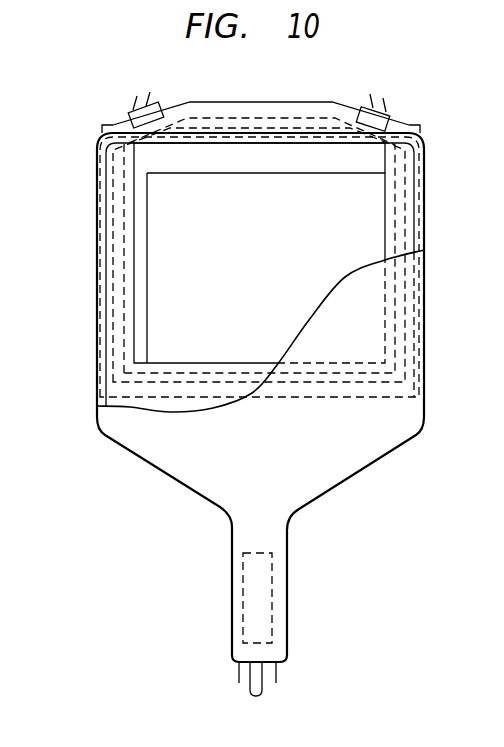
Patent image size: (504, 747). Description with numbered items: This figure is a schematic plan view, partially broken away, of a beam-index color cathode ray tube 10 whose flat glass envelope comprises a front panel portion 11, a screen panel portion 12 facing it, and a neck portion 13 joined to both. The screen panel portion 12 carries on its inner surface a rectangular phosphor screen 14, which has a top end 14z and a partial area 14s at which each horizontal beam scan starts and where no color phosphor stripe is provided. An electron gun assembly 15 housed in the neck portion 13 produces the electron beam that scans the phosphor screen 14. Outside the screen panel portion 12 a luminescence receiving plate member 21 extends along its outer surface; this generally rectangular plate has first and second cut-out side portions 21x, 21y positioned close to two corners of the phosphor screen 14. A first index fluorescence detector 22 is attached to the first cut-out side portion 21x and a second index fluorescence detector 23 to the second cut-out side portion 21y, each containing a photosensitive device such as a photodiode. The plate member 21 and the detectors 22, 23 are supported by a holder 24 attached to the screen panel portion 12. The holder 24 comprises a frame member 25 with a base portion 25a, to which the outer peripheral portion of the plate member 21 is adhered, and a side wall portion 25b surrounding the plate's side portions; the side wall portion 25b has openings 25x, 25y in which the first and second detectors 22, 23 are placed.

The color cathode ray tube 10 is at (250, 375).
The front panel portion 11 is at (372, 287).
The screen panel portion 12 is at (97, 372).
The neck portion 13 is at (298, 508).
The phosphor screen 14 is at (248, 215).
The partial area of the phosphor screen 14s is at (140, 323).
The top end of the phosphor screen 14z is at (200, 172).
The electron gun assembly 15 is at (268, 596).
The luminescence receiving plate member 21 is at (113, 250).
The first cut-out side portion 21x is at (104, 124).
The second cut-out side portion 21y is at (409, 124).
The first index fluorescence detector 22 is at (126, 93).
The second index fluorescence detector 23 is at (390, 96).
The holder 24 is at (262, 101).
The frame member 25 is at (227, 232).
The base portion 25a is at (126, 163).
The side wall portion 25b is at (106, 277).
The opening 25x is at (166, 106).
The opening 25y is at (354, 110).